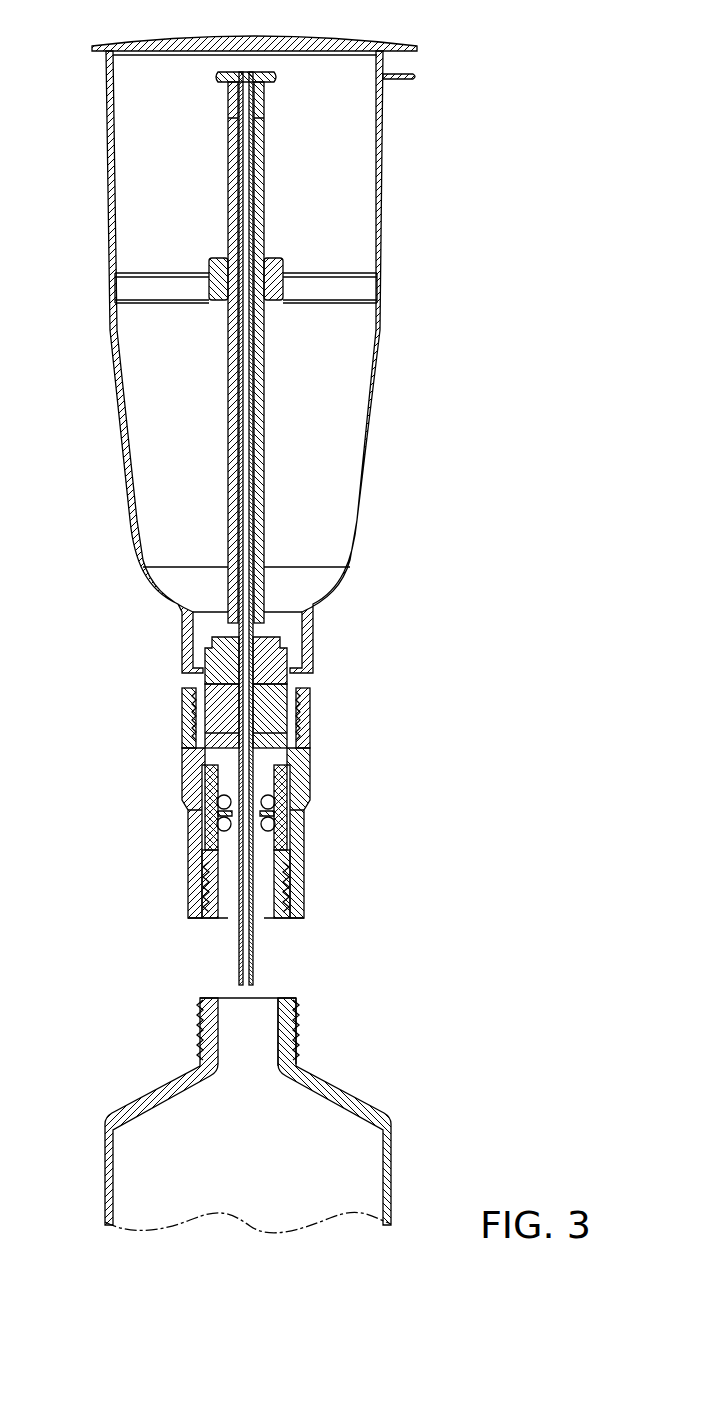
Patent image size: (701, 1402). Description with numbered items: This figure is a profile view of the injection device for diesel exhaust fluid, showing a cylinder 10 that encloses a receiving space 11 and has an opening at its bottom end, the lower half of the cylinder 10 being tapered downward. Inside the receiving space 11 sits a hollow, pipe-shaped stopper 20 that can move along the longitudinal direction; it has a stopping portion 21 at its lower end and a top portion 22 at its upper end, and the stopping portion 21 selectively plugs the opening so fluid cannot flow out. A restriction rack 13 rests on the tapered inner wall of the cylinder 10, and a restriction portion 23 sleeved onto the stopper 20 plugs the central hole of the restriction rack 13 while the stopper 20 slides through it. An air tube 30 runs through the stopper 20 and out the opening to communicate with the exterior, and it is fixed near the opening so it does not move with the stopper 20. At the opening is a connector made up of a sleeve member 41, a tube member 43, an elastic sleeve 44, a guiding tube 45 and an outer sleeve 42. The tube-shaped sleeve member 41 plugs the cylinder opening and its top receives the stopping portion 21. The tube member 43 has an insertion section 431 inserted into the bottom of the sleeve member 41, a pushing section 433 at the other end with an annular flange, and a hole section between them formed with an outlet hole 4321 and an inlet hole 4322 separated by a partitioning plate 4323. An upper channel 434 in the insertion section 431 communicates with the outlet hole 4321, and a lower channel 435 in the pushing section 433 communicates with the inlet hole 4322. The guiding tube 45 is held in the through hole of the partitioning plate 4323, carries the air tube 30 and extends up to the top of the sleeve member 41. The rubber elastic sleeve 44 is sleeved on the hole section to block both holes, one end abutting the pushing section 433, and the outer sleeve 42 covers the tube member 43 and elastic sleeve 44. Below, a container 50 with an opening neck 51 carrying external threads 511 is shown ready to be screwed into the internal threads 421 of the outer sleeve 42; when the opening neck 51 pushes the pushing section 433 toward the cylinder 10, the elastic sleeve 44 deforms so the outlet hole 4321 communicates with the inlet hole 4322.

The cylinder 10 is at (113, 367).
The receiving space 11 is at (122, 137).
The restriction rack 13 is at (125, 272).
The stopper 20 is at (265, 532).
The stopping portion 21 is at (277, 637).
The top portion 22 is at (275, 78).
The restriction portion 23 is at (282, 262).
The air tube 30 is at (237, 720).
The sleeve member 41 is at (287, 687).
The outer sleeve 42 is at (200, 820).
The tube member 43 is at (300, 772).
The elastic sleeve 44 is at (208, 780).
The guiding tube 45 is at (270, 717).
The container 50 is at (387, 1157).
The opening neck 51 is at (290, 1028).
The internal threads 421 is at (212, 907).
The insertion section 431 is at (195, 697).
The pushing section 433 is at (295, 857).
The upper channel 434 is at (232, 733).
The lower channel 435 is at (263, 880).
The external threads 511 is at (197, 1020).
The outlet hole 4321 is at (277, 800).
The inlet hole 4322 is at (277, 828).
The partitioning plate 4323 is at (213, 822).